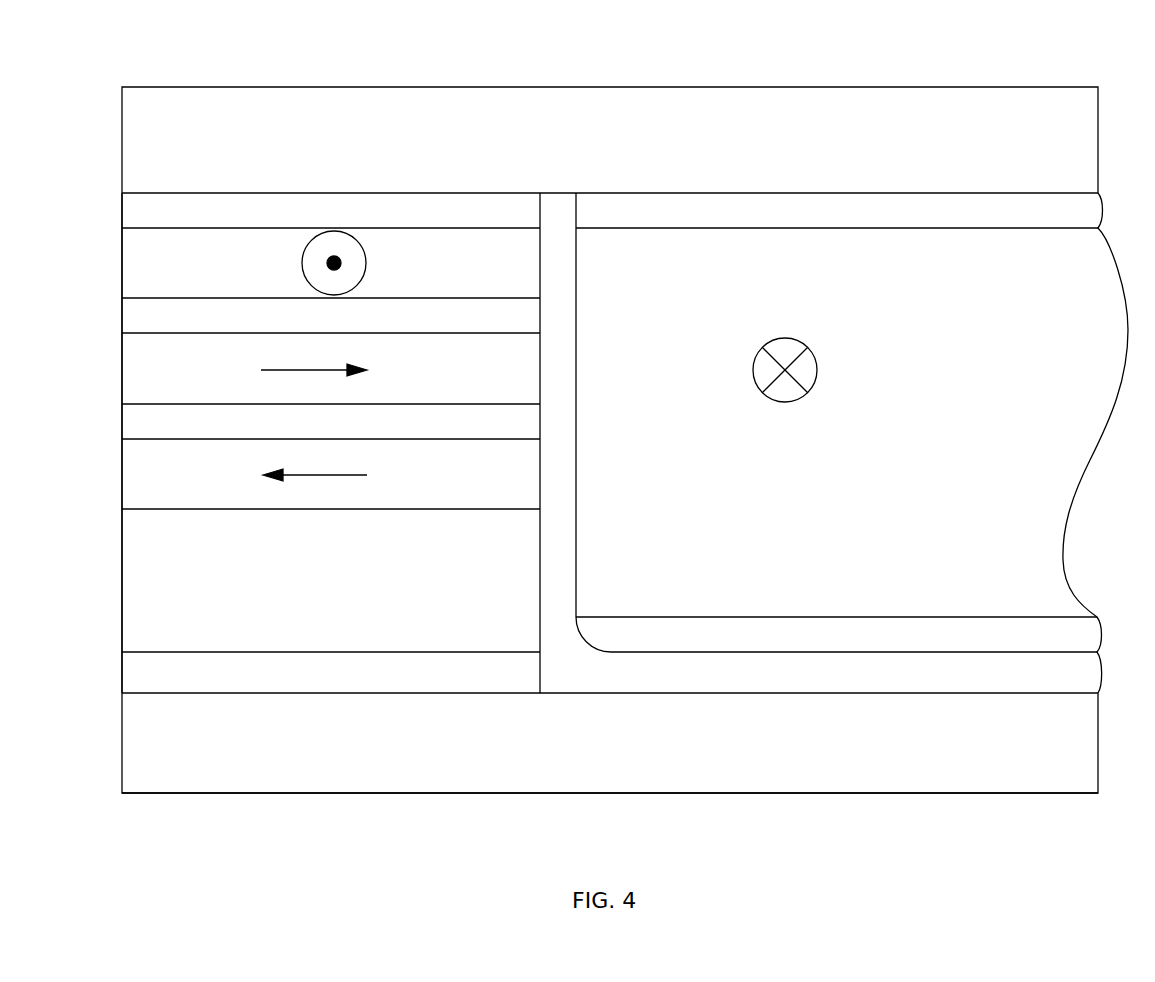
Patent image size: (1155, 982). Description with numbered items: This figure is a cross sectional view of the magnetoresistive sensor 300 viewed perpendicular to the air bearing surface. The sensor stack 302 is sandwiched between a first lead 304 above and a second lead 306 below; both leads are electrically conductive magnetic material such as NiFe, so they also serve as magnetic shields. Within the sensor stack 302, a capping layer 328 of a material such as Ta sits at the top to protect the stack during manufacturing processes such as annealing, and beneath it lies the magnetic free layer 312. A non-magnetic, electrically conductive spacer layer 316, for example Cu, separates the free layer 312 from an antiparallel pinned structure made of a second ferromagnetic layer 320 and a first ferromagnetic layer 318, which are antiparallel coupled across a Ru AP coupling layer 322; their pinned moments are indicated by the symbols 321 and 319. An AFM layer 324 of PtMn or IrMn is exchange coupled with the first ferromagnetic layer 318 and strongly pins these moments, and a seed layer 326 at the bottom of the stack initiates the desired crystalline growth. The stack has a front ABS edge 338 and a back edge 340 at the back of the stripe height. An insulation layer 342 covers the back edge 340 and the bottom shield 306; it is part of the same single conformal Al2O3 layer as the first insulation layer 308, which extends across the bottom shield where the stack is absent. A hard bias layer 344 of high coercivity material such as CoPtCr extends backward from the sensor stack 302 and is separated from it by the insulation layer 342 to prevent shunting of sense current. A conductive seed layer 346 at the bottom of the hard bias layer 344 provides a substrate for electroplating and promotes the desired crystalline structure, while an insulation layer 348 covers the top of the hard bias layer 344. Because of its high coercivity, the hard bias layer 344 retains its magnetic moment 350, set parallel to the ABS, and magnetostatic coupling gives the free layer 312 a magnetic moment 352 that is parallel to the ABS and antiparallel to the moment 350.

The magnetoresistive sensor 300 is at (935, 67).
The sensor stack 302 is at (542, 315).
The first lead 304 is at (392, 142).
The second lead 306 is at (230, 742).
The first insulation layer 308 is at (755, 669).
The free layer 312 is at (392, 261).
The spacer layer 316 is at (392, 314).
The first ferromagnetic layer 318 is at (392, 473).
The magnetic moment symbol 319 is at (322, 475).
The second ferromagnetic layer 320 is at (392, 369).
The magnetic moment symbol 321 is at (297, 370).
The AP coupling layer 322 is at (392, 419).
The AFM layer 324 is at (380, 578).
The seed layer 326 is at (230, 667).
The capping layer 328 is at (392, 210).
The ABS edge 338 is at (122, 348).
The back edge 340 is at (542, 419).
The insulation layer 342 is at (563, 520).
The hard bias layer 344 is at (760, 502).
The seed layer 346 is at (815, 641).
The insulation layer 348 is at (818, 206).
The magnetic moment 350 is at (817, 366).
The magnetic moment 352 is at (302, 263).